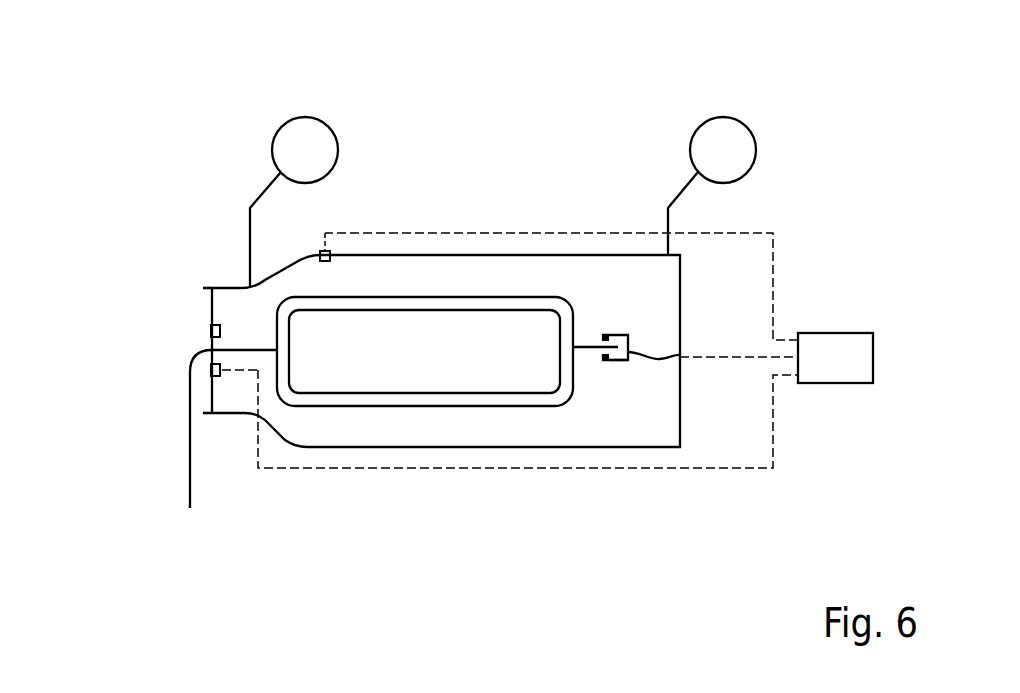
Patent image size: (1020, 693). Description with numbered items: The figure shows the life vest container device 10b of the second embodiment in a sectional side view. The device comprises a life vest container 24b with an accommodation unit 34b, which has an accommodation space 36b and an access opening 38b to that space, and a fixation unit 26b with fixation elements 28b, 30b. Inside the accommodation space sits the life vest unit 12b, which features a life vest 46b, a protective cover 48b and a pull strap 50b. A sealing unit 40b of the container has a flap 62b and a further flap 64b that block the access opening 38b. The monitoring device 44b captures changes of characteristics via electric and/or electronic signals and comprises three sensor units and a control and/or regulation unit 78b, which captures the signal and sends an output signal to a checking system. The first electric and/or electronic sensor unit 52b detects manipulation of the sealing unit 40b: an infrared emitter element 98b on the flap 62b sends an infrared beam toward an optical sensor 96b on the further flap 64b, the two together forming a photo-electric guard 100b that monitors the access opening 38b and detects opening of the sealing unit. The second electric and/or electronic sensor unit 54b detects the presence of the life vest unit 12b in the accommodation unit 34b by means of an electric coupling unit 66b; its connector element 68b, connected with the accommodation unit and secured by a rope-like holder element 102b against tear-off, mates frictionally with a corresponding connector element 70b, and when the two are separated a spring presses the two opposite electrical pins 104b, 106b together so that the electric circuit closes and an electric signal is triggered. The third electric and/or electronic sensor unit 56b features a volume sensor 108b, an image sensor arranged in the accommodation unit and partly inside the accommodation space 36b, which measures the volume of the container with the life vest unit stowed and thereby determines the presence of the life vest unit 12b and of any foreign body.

The life vest container device 10b is at (147, 138).
The life vest unit 12b is at (573, 409).
The life vest container 24b is at (307, 480).
The fixation unit 26b is at (768, 155).
The fixation element 28b is at (305, 117).
The fixation element 30b is at (726, 117).
The accommodation unit 34b is at (387, 448).
The accommodation space 36b is at (500, 268).
The access opening 38b is at (232, 392).
The sealing unit 40b is at (188, 348).
The monitoring device 44b is at (498, 193).
The life vest 46b is at (545, 358).
The protective cover 48b is at (475, 406).
The pull strap 50b is at (190, 493).
The first electric and/or electronic sensor unit 52b is at (197, 337).
The second electric and/or electronic sensor unit 54b is at (654, 376).
The third electric and/or electronic sensor unit 56b is at (330, 250).
The flap 62b is at (210, 302).
The further flap 64b is at (207, 403).
The electric coupling unit 66b is at (616, 361).
The connector element 68b is at (630, 376).
The corresponding connector element 70b is at (588, 344).
The control and/or regulation unit 78b is at (833, 350).
The optical sensor 96b is at (207, 357).
The infrared emitter element 98b is at (203, 328).
The photo-electric guard 100b is at (228, 338).
The holder element 102b is at (660, 345).
The electrical pin 104b is at (610, 334).
The electrical pin 106b is at (604, 361).
The volume sensor 108b is at (325, 227).